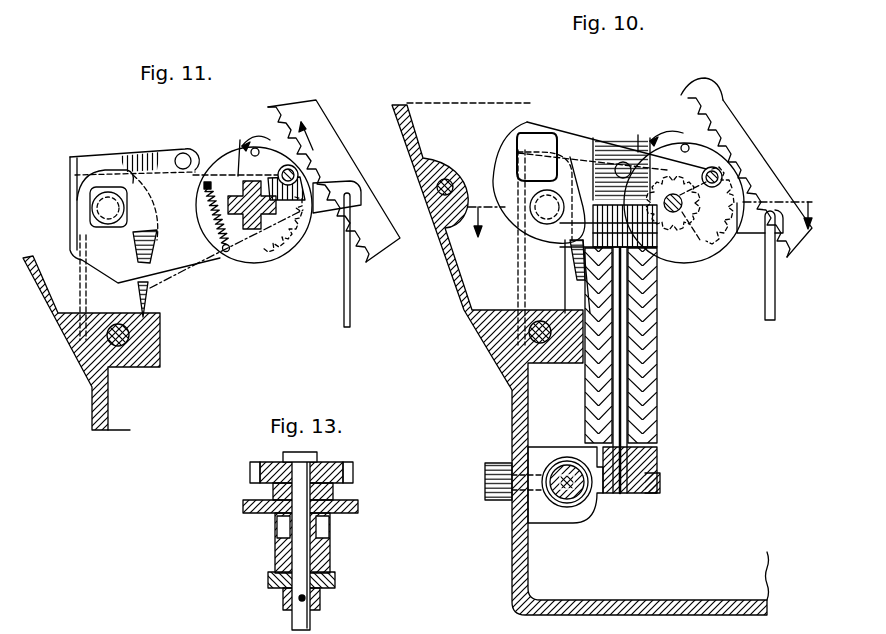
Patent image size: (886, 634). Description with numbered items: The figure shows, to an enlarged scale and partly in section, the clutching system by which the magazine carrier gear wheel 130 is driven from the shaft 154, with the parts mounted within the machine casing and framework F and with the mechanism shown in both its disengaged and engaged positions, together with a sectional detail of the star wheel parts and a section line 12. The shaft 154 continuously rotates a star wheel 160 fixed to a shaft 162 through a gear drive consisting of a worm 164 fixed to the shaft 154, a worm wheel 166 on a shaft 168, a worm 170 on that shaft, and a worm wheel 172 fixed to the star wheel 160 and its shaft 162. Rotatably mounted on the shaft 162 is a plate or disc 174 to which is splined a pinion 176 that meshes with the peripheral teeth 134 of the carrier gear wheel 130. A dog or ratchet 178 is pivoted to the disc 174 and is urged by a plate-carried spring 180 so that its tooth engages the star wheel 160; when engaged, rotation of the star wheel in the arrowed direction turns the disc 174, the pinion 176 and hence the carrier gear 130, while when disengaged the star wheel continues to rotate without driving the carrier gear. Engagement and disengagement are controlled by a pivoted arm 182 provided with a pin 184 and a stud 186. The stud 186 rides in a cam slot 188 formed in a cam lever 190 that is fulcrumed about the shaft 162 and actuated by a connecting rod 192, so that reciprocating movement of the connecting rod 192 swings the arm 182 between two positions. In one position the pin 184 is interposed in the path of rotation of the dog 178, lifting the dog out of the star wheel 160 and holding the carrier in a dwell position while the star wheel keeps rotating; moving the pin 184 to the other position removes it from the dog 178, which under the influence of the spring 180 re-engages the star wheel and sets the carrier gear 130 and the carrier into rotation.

In FIG. 10, the section line 12 is at (633, 210).
In FIG. 11, the gear wheel 130 is at (368, 262).
In FIG. 10, the gear wheel 130 is at (723, 120).
In FIG. 10, the peripheral teeth 134 is at (681, 97).
In FIG. 10, the shaft 154 is at (575, 500).
In FIG. 11, the star wheel 160 is at (250, 228).
In FIG. 10, the star wheel 160 is at (683, 250).
In FIG. 13, the star wheel 160 is at (282, 535).
In FIG. 11, the shaft 162 is at (288, 186).
In FIG. 10, the shaft 162 is at (714, 168).
In FIG. 13, the shaft 162 is at (303, 553).
In FIG. 10, the worm 164 is at (570, 465).
In FIG. 10, the worm wheel 166 is at (637, 493).
In FIG. 10, the shaft 168 is at (620, 345).
In FIG. 10, the worm 170 is at (562, 243).
In FIG. 10, the worm wheel 172 is at (717, 273).
In FIG. 13, the worm wheel 172 is at (270, 580).
In FIG. 11, the plate or disc 174 is at (233, 258).
In FIG. 10, the plate or disc 174 is at (670, 258).
In FIG. 13, the plate or disc 174 is at (355, 505).
In FIG. 11, the pinion 176 is at (297, 238).
In FIG. 10, the pinion 176 is at (720, 243).
In FIG. 13, the pinion 176 is at (336, 466).
In FIG. 11, the dog or ratchet 178 is at (247, 148).
In FIG. 10, the dog or ratchet 178 is at (663, 135).
In FIG. 11, the spring 180 is at (207, 225).
In FIG. 11, the pivoted arm 182 is at (92, 290).
In FIG. 10, the pivoted arm 182 is at (518, 282).
In FIG. 11, the pin 184 is at (185, 153).
In FIG. 10, the pin 184 is at (621, 162).
In FIG. 11, the stud 186 is at (92, 208).
In FIG. 10, the stud 186 is at (545, 200).
In FIG. 11, the cam slot 188 is at (73, 250).
In FIG. 10, the cam slot 188 is at (525, 130).
In FIG. 11, the cam lever 190 is at (177, 270).
In FIG. 10, the cam lever 190 is at (553, 127).
In FIG. 11, the connecting rod 192 is at (351, 302).
In FIG. 10, the connecting rod 192 is at (775, 290).
In FIG. 10, the machine casing and framework F is at (640, 600).